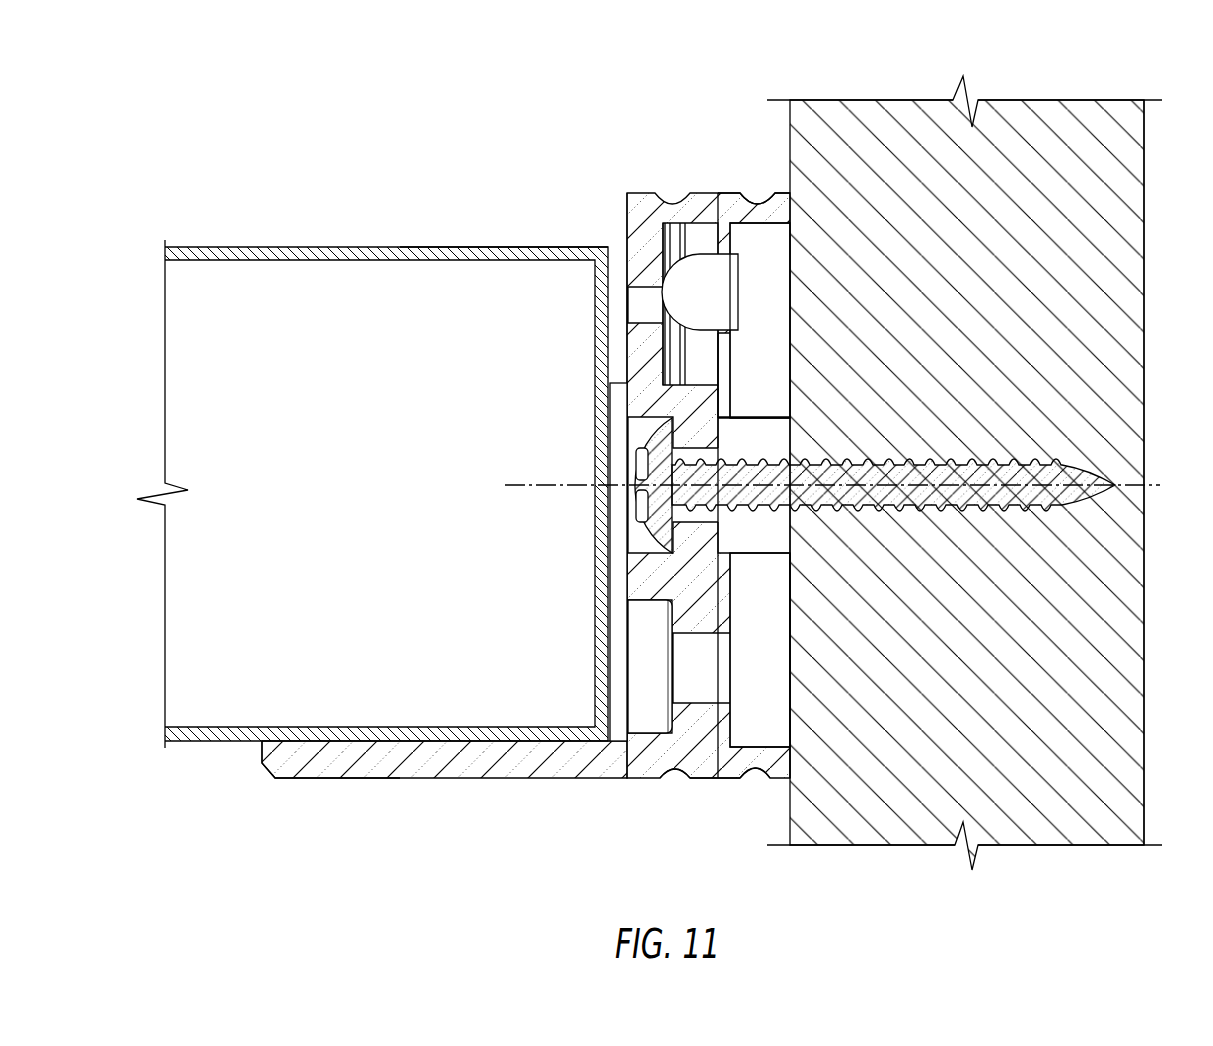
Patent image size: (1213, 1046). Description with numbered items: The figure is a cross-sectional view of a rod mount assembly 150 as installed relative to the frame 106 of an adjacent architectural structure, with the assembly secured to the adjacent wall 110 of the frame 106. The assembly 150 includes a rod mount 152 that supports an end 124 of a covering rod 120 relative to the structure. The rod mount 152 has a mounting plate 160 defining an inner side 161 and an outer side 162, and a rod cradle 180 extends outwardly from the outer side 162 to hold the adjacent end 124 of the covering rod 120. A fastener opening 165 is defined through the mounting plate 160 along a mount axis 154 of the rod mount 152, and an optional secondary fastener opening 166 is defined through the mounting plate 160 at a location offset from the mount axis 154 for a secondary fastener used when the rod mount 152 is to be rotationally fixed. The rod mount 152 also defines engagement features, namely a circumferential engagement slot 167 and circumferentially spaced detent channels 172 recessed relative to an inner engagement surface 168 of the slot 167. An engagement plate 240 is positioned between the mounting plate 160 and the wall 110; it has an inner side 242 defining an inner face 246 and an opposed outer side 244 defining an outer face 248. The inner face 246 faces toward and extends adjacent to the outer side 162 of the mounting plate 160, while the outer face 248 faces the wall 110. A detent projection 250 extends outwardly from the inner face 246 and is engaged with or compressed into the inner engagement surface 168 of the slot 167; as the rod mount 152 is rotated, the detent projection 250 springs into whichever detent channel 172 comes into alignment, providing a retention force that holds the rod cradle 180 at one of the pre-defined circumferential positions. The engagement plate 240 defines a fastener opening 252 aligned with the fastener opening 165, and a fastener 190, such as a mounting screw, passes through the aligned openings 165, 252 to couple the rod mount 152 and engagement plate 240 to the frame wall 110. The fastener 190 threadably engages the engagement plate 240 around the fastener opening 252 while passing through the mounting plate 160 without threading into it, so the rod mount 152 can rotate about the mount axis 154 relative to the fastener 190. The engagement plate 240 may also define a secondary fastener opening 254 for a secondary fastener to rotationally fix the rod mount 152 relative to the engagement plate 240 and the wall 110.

The frame 106 is at (1150, 133).
The wall 110 is at (1020, 118).
The covering rod 120 is at (248, 245).
The end 124 is at (500, 245).
The rod mount assembly 150 is at (372, 98).
The rod mount 152 is at (515, 776).
The mount axis 154 is at (516, 484).
The mounting plate 160 is at (640, 190).
The inner side 161 is at (624, 236).
The outer side 162 is at (720, 212).
The fastener opening 165 is at (633, 428).
The secondary fastener opening 166 is at (642, 661).
The circumferential engagement slot 167 is at (697, 365).
The inner engagement surface 168 is at (690, 240).
The detent channels 172 is at (672, 353).
The rod cradle 180 is at (358, 758).
The fastener 190 is at (642, 508).
The engagement plate 240 is at (755, 769).
The inner side 242 is at (715, 744).
The outer side 244 is at (797, 762).
The inner face 246 is at (704, 737).
The outer face 248 is at (790, 618).
The detent projection 250 is at (720, 298).
The fastener opening 252 is at (770, 458).
The secondary fastener opening 254 is at (725, 628).